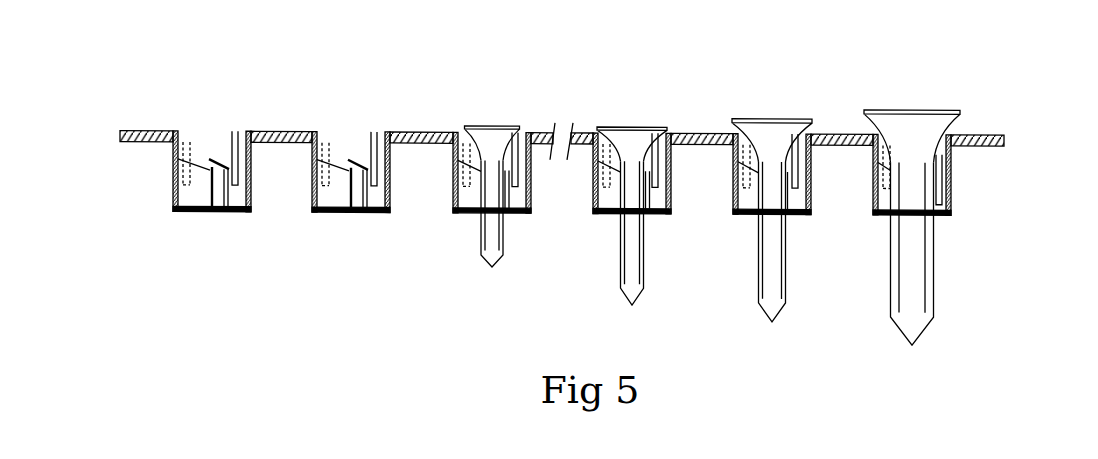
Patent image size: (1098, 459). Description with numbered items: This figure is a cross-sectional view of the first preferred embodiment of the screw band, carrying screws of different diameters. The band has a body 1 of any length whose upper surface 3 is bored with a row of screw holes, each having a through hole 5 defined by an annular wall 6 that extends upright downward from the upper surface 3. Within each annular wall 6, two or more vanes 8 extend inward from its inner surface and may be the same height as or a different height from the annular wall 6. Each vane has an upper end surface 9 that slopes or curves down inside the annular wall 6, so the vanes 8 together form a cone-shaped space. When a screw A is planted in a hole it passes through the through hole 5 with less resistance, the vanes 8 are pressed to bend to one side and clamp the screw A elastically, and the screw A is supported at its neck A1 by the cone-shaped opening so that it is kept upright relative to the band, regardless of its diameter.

The body 1 is at (603, 194).
The upper surface 3 is at (404, 127).
The through hole 5 is at (203, 160).
The annular wall 6 is at (251, 175).
The vanes 8 is at (193, 202).
The upper end surface 9 is at (220, 158).
The screw A is at (500, 240).
The neck A1 is at (468, 126).